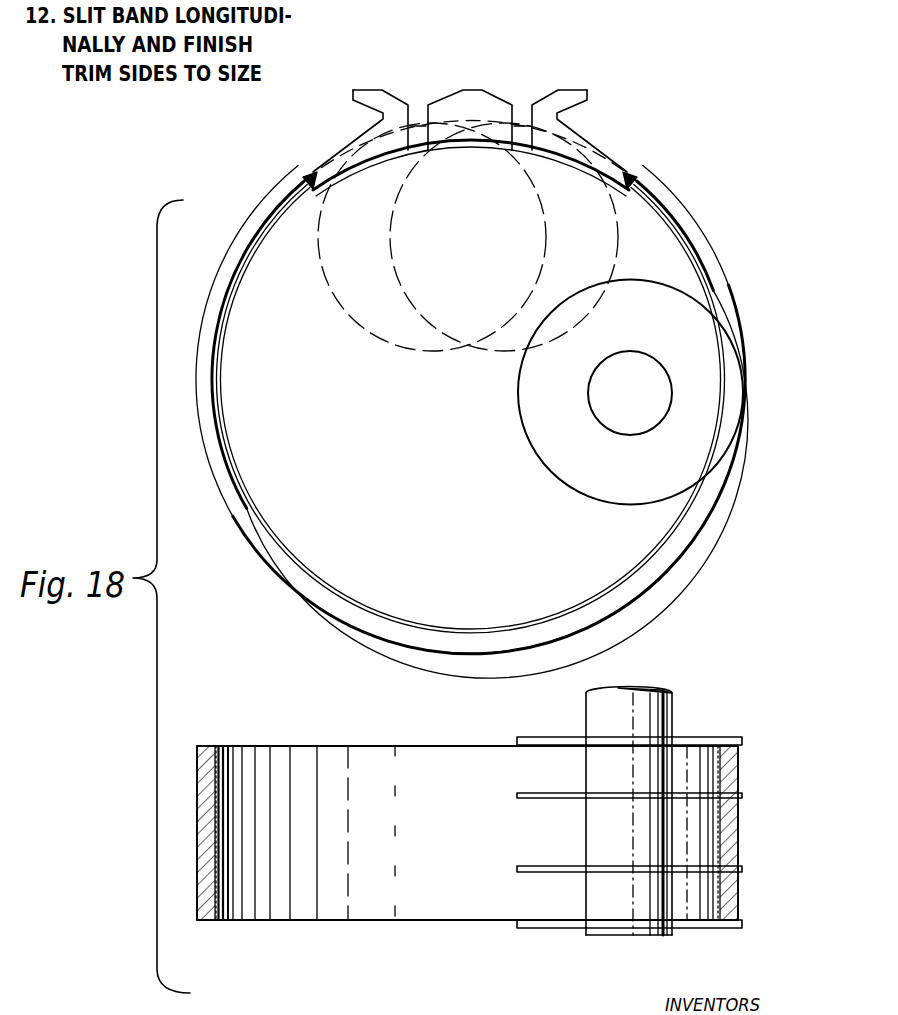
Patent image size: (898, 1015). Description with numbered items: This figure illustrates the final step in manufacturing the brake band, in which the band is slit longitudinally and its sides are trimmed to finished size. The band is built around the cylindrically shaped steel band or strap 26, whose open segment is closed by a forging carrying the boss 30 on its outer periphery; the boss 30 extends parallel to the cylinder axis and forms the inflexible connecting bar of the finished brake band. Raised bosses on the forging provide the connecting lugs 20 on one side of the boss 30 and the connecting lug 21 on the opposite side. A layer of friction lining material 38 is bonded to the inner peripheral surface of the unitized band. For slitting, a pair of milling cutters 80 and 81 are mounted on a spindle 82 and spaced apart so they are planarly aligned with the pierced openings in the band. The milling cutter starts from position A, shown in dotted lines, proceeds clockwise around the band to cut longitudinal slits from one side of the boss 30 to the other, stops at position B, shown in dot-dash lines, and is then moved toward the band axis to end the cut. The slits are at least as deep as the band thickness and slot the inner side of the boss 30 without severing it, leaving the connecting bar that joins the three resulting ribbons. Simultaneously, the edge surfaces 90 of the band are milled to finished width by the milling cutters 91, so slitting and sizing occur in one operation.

The connecting lugs 20 is at (371, 96).
The connecting lug 21 is at (573, 93).
The boss 30 is at (488, 108).
The band or strap 26 is at (270, 578).
The friction lining material 38 is at (284, 572).
The spindle 82 is at (640, 366).
The milling cutters 91 is at (553, 450).
The milling cutter 80 is at (517, 795).
The milling cutter 81 is at (517, 870).
The edge surfaces 90 is at (390, 746).
The position A is at (500, 350).
The position B is at (380, 337).